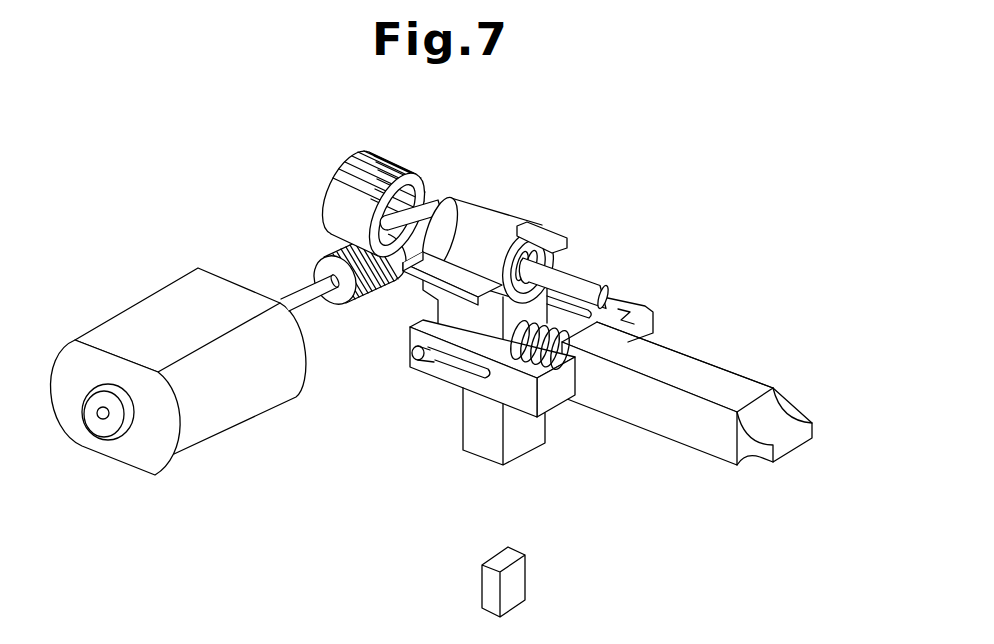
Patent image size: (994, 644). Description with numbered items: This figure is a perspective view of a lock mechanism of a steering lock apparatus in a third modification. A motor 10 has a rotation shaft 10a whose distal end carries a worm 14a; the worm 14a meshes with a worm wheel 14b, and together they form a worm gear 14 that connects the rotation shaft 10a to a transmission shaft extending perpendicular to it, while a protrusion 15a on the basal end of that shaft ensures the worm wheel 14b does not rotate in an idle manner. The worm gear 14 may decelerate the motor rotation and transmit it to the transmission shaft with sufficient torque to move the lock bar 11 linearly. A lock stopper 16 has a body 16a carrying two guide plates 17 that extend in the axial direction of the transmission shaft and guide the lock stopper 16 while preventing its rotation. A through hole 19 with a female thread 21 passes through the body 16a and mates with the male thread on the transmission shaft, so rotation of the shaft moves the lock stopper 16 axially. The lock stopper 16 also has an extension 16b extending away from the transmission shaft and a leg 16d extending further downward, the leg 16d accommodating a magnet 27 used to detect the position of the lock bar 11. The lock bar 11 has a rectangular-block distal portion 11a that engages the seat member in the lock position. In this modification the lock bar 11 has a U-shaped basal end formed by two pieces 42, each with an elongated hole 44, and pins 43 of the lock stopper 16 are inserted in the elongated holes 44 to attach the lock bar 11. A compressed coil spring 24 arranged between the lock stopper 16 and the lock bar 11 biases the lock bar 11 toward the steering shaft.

The motor 10 is at (137, 302).
The rotation shaft 10a is at (298, 297).
The lock bar 11 is at (748, 377).
The distal portion 11a is at (720, 362).
The worm gear 14 is at (318, 227).
The worm 14a is at (310, 260).
The worm wheel 14b is at (318, 198).
The protrusion 15a is at (413, 200).
The lock stopper 16 is at (530, 370).
The body 16a is at (477, 200).
The extension 16b is at (462, 420).
The leg 16d is at (462, 440).
The guide plates 17 is at (557, 228).
The through hole 19 is at (530, 228).
The female thread 21 is at (552, 252).
The coil spring 24 is at (577, 377).
The magnet 27 is at (527, 580).
The pieces 42 is at (643, 303).
The pins 43 is at (412, 355).
The elongated hole 44 is at (603, 292).